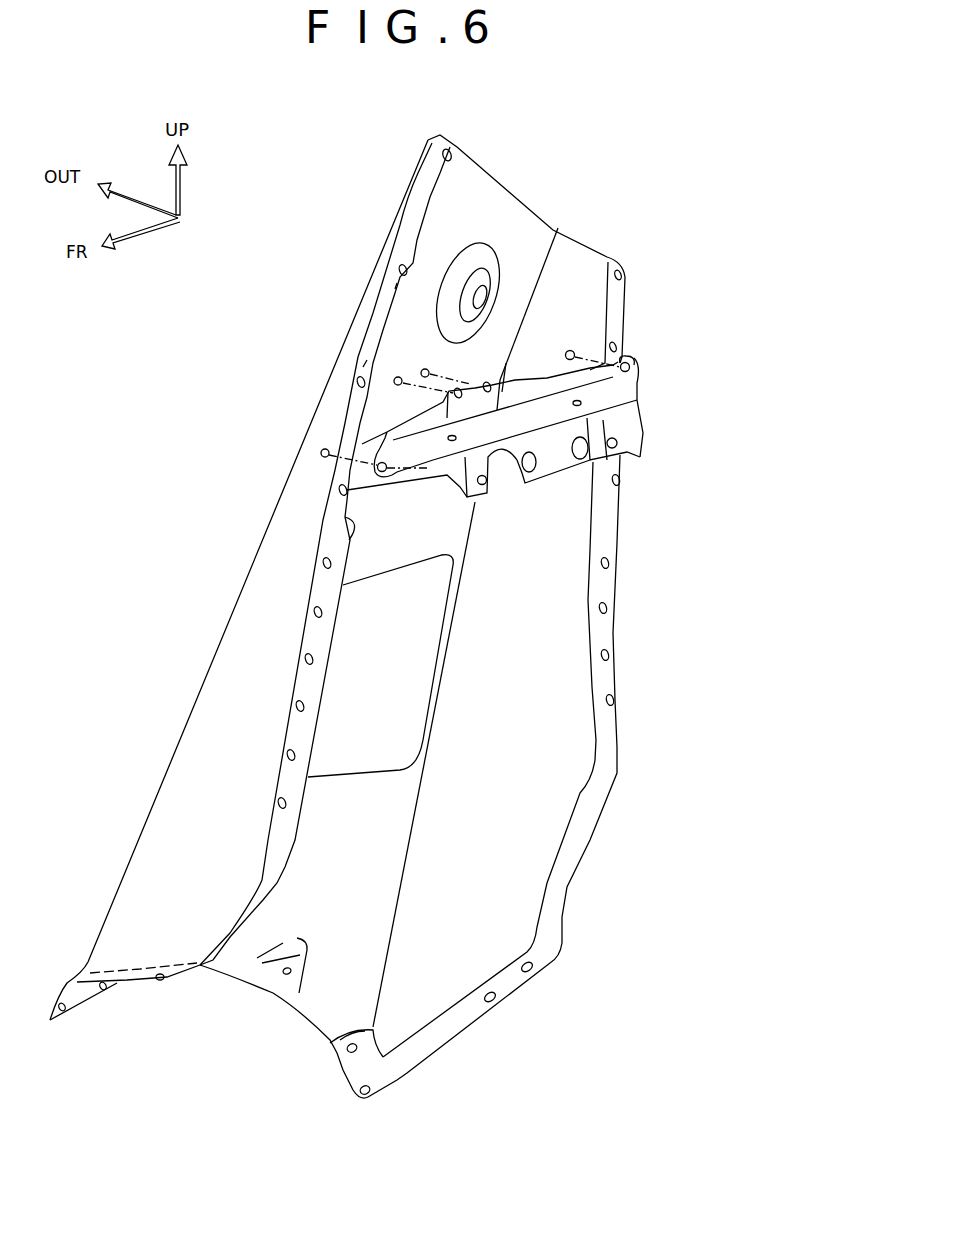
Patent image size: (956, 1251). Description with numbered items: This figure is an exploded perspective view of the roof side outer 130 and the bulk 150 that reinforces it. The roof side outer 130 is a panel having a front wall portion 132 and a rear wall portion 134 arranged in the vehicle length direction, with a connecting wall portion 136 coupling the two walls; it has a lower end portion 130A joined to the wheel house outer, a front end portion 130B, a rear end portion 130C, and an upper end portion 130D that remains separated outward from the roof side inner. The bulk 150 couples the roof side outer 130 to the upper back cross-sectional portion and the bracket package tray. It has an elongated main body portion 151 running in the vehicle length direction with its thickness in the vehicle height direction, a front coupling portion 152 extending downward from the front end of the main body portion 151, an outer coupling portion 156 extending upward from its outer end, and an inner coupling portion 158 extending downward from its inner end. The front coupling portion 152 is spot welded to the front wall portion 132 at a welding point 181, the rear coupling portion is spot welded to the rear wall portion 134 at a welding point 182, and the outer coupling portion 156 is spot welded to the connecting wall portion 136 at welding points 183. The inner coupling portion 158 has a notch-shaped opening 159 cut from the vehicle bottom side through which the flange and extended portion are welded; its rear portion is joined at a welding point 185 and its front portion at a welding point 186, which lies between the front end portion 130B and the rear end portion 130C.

The roof side outer 130 is at (532, 200).
The lower end portion 130A is at (273, 993).
The front end portion 130B is at (300, 655).
The rear end portion 130C is at (615, 628).
The upper end portion 130D is at (553, 230).
The front wall portion 132 is at (268, 572).
The rear wall portion 134 is at (580, 555).
The connecting wall portion 136 is at (378, 882).
The bulk 150 is at (538, 383).
The main body portion 151 is at (553, 395).
The front coupling portion 152 is at (393, 487).
The outer coupling portion 156 is at (488, 382).
The inner coupling portion 158 is at (560, 455).
The opening 159 is at (522, 476).
The welding point 181 is at (320, 453).
The welding point 182 is at (575, 353).
The welding points 183 is at (399, 377).
The welding point 185 is at (618, 440).
The welding point 186 is at (488, 500).